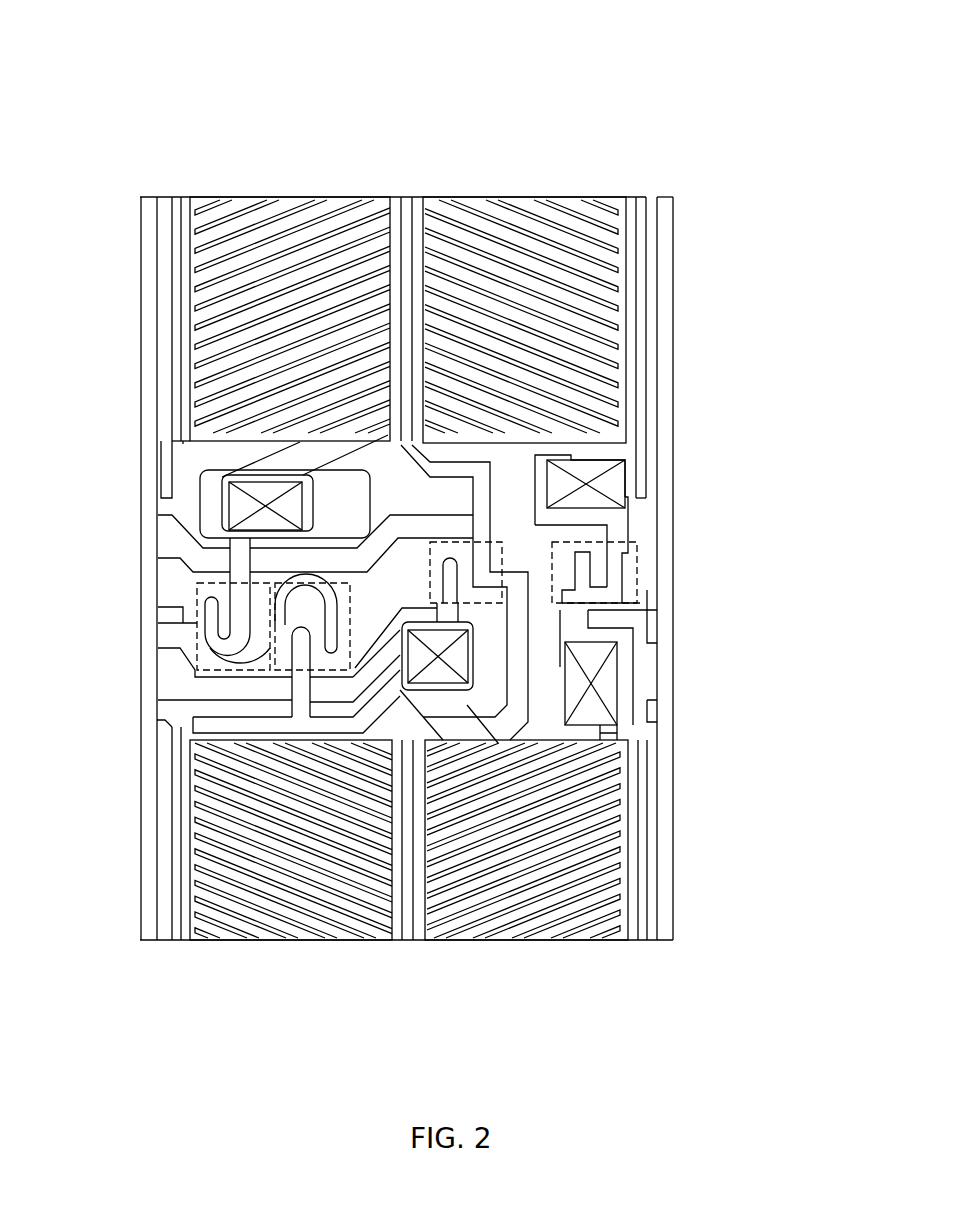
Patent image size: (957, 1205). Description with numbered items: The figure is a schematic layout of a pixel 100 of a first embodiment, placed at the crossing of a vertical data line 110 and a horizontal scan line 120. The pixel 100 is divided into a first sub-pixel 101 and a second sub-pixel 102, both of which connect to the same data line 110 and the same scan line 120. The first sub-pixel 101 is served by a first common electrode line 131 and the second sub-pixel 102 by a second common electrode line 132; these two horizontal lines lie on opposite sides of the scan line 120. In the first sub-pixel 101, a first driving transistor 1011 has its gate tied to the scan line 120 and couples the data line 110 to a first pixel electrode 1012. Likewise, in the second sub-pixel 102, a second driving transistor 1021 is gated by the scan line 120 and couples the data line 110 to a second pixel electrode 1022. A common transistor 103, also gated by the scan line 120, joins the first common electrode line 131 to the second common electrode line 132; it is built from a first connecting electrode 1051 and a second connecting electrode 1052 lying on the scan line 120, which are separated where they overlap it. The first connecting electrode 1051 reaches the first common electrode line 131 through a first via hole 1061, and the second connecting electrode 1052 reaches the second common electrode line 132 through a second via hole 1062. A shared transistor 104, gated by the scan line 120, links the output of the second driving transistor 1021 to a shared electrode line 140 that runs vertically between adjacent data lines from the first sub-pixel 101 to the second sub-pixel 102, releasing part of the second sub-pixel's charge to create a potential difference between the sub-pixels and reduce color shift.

The pixel 100 is at (152, 62).
The data line 110 is at (148, 228).
The shared electrode line 140 is at (407, 212).
The first pixel electrode 1012 is at (190, 323).
The first common electrode line 131 is at (180, 462).
The scan line 120 is at (165, 578).
The first driving transistor 1011 is at (195, 613).
The second common electrode line 132 is at (162, 712).
The second driving transistor 1021 is at (303, 668).
The second pixel electrode 1022 is at (185, 890).
The shared transistor 104 is at (455, 542).
The first via hole 1061 is at (615, 488).
The first connecting electrode 1051 is at (610, 515).
The common transistor 103 is at (635, 598).
The second connecting electrode 1052 is at (627, 683).
The second via hole 1062 is at (600, 722).
The first sub-pixel 101 is at (802, 205).
The second sub-pixel 102 is at (802, 602).